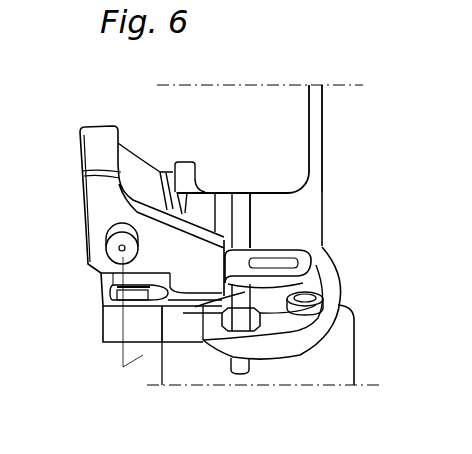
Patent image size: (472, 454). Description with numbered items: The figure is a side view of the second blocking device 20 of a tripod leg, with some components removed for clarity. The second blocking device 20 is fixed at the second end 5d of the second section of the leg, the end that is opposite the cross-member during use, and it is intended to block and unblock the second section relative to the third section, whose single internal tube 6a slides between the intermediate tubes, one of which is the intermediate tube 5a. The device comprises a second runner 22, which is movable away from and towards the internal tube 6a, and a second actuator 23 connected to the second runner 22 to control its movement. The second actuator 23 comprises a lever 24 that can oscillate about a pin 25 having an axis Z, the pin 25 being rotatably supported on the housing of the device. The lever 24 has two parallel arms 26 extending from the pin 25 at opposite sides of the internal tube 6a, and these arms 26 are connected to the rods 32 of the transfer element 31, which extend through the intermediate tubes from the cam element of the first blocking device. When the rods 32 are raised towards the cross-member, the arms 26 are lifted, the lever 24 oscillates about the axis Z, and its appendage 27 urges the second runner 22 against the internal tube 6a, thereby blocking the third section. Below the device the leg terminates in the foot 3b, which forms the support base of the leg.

The second blocking device 20 is at (80, 278).
The second runner 22 is at (184, 148).
The second actuator 23 is at (147, 268).
The lever 24 is at (96, 110).
The pin 25 is at (110, 243).
The arms 26 is at (200, 256).
The appendage 27 is at (163, 172).
The transfer element 31 is at (265, 200).
The rods 32 is at (250, 235).
The foot 3b is at (365, 347).
The intermediate tube 5a is at (305, 128).
The second end of the second section 5d is at (304, 175).
The internal tube 6a is at (313, 211).
The axis Z is at (143, 321).